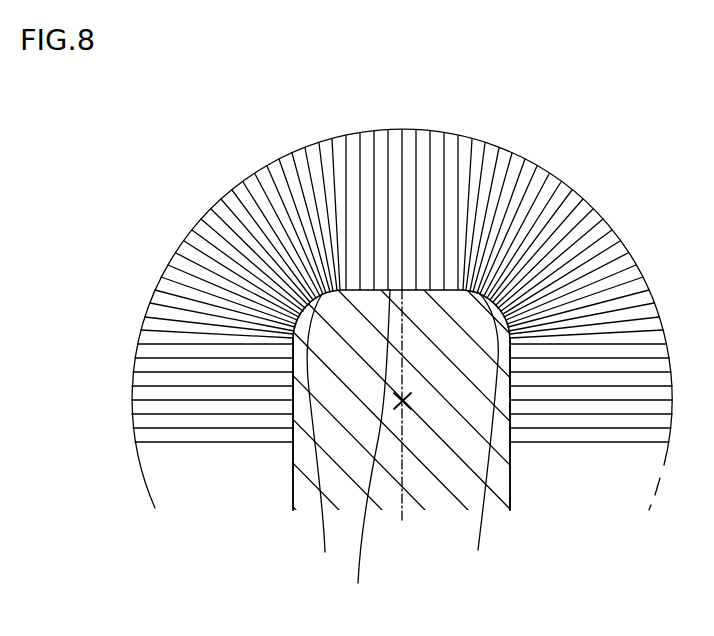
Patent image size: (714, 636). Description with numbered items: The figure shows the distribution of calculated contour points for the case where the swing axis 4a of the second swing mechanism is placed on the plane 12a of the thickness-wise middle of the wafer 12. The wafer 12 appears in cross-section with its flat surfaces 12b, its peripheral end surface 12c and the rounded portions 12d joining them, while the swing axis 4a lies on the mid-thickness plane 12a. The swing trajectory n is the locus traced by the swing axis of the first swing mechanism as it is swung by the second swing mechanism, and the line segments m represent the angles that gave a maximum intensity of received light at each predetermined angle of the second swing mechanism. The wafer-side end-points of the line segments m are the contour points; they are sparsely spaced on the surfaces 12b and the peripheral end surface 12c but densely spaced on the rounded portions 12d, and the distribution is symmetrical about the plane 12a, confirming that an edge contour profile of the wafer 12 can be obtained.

The wafer 12 is at (512, 477).
The plane of the thickness-wise middle of wafer 12a is at (402, 405).
The surfaces of the wafer 12b is at (292, 498).
The peripheral end surface 12c is at (367, 452).
The rounded portions 12d is at (402, 435).
The swing axis of the second swing mechanism 4a is at (404, 410).
The line segments m is at (215, 443).
The swing trajectory n is at (145, 478).